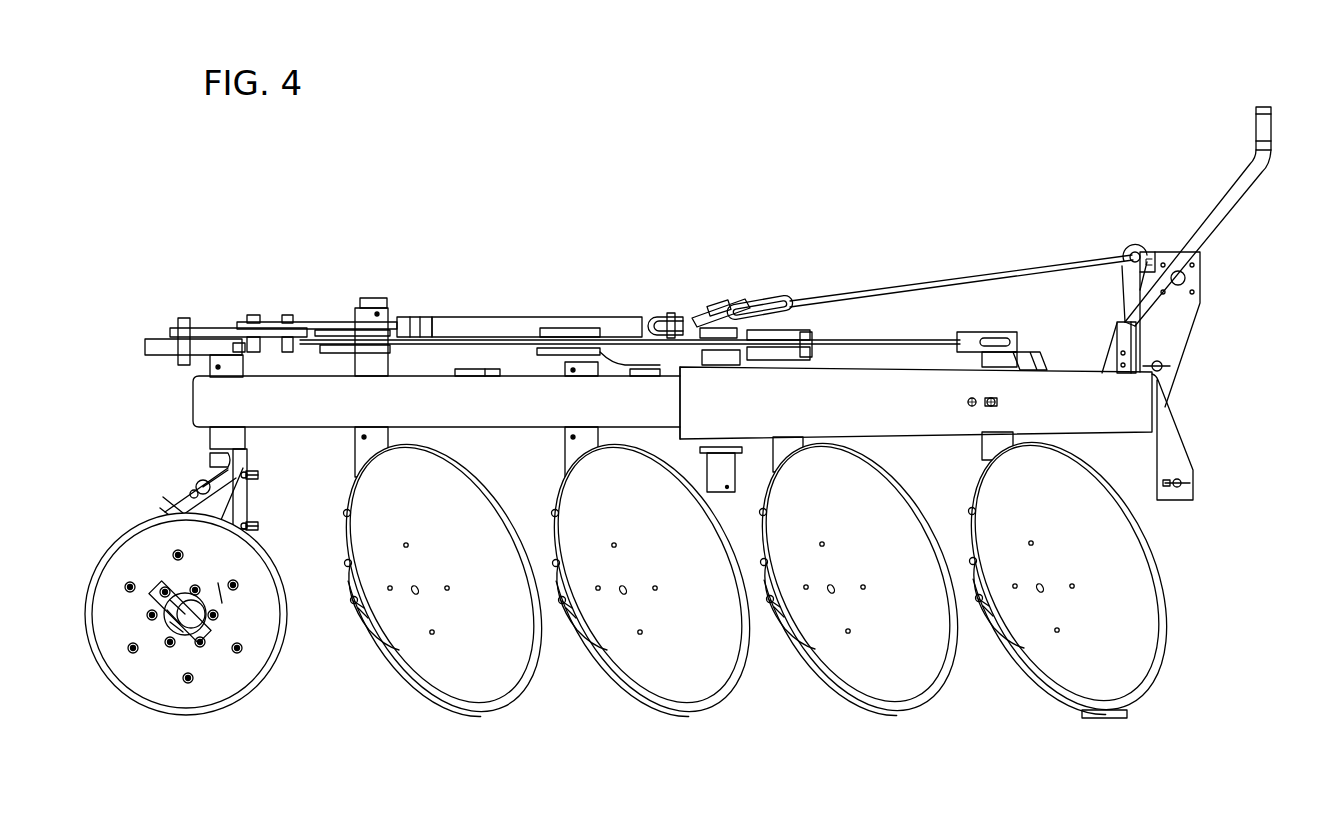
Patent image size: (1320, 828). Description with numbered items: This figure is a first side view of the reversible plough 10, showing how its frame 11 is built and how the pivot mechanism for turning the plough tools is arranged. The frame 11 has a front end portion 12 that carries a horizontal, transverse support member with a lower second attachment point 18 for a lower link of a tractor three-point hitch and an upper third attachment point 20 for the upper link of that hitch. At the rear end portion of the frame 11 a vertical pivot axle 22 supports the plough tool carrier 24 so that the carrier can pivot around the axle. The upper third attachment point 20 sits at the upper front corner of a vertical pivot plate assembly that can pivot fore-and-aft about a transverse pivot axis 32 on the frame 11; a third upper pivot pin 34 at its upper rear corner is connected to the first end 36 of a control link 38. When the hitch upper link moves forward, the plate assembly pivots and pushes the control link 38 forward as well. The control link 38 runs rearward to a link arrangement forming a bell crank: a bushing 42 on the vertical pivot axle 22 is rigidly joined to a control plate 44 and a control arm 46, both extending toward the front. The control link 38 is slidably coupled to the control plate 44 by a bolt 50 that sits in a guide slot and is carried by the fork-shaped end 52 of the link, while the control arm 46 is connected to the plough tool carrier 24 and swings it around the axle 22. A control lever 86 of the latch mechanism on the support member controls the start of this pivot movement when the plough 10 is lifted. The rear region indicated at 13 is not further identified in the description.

The reversible plough 10 is at (652, 134).
The frame 11 is at (947, 441).
The front end portion 12 is at (1111, 308).
The rear mounting bracket assembly 13 is at (1218, 518).
The lower second attachment point 18 is at (1183, 482).
The upper third attachment point 20 is at (1186, 280).
The vertical pivot axle 22 is at (718, 474).
The plough tool carrier 24 is at (440, 408).
The transverse pivot axis 32 is at (1162, 365).
The third upper pivot pin 34 is at (1137, 252).
The first end 36 is at (1128, 250).
The control link 38 is at (950, 282).
The bushing 42 is at (700, 306).
The control plate 44 is at (755, 298).
The control arm 46 is at (792, 362).
The bolt 50 is at (733, 300).
The fork-shaped end 52 is at (782, 298).
The control lever 86 is at (1233, 193).